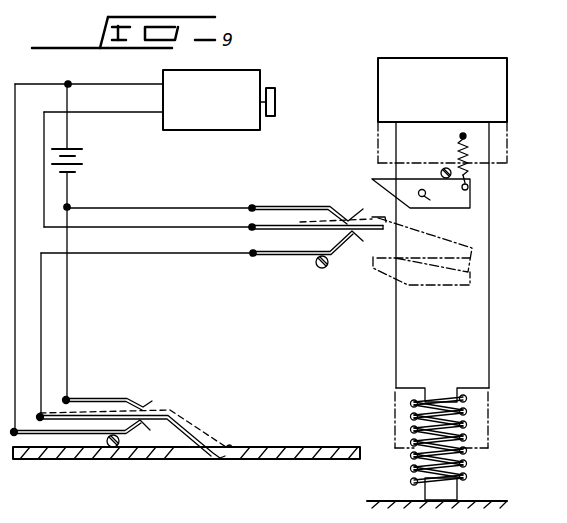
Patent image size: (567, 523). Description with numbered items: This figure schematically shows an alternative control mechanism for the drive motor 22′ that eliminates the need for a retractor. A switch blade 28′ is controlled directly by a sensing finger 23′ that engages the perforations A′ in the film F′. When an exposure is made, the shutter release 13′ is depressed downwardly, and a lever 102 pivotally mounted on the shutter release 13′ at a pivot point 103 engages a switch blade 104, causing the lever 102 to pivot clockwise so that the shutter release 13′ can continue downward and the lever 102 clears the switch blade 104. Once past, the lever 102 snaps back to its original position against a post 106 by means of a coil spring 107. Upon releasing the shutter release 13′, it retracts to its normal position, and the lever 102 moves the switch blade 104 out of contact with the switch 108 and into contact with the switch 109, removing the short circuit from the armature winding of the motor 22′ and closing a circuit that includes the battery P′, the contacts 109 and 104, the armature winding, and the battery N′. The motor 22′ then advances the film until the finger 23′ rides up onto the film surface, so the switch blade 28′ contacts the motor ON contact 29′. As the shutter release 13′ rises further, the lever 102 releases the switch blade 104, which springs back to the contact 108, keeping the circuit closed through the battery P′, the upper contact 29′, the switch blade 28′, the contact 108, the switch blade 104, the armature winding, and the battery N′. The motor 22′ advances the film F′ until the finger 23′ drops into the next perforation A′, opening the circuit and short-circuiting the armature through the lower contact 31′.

The shutter release 13′ is at (490, 92).
The motor 22′ is at (215, 132).
The battery N′ is at (69, 148).
The battery P′ is at (70, 180).
The lever 102 is at (397, 200).
The pivot point 103 is at (430, 197).
The switch blade 104 is at (305, 231).
The post 106 is at (445, 168).
The coil spring 107 is at (475, 165).
The switch 108 is at (340, 252).
The switch 109 is at (350, 216).
The motor ON contact 29′ is at (135, 404).
The switch blade 28′ is at (162, 421).
The lower contact 31′ is at (136, 433).
The finger 23′ is at (218, 460).
The film perforation A′ is at (235, 447).
The film F′ is at (278, 448).